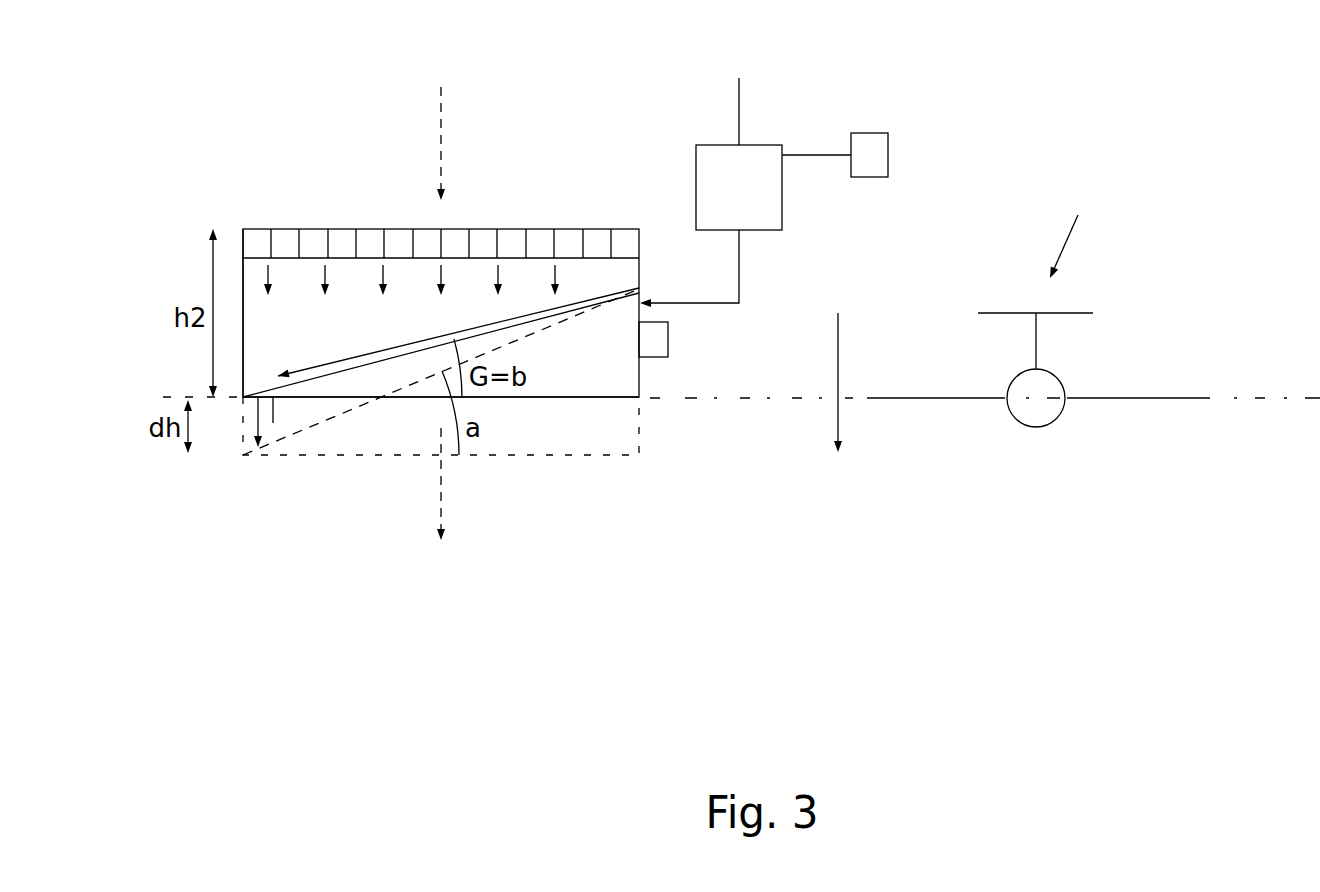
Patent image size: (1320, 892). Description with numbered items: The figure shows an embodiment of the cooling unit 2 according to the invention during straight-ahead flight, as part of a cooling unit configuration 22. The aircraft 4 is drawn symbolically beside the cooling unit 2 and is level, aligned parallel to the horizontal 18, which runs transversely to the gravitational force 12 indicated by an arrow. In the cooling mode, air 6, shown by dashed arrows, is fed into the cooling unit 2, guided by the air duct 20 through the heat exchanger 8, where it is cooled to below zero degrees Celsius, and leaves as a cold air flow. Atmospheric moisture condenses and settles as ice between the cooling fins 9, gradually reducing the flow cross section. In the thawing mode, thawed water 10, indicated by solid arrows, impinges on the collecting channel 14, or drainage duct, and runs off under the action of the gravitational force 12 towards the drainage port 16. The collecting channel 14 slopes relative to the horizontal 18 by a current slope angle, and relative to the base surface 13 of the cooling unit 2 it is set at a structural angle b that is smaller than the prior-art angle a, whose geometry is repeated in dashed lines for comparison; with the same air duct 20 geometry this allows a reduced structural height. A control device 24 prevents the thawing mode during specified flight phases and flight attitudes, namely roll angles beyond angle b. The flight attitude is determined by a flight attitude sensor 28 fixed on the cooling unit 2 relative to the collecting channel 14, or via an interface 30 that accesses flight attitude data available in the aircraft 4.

The cooling unit 2 is at (275, 121).
The aircraft 4 is at (1055, 418).
The air 6 is at (441, 130).
The heat exchanger 8 is at (242, 240).
The cooling fins 9 is at (327, 242).
The thawed water 10 is at (441, 277).
The gravitational force 12 is at (838, 355).
The base surface 13 is at (577, 397).
The collecting channel 14 is at (592, 295).
The drainage port 16 is at (242, 413).
The horizontal 18 is at (740, 400).
The air duct 20 is at (243, 355).
The cooling unit configuration 22 is at (886, 90).
The control device 24 is at (782, 185).
The flight attitude sensor 28 is at (668, 338).
The interface 30 is at (888, 152).